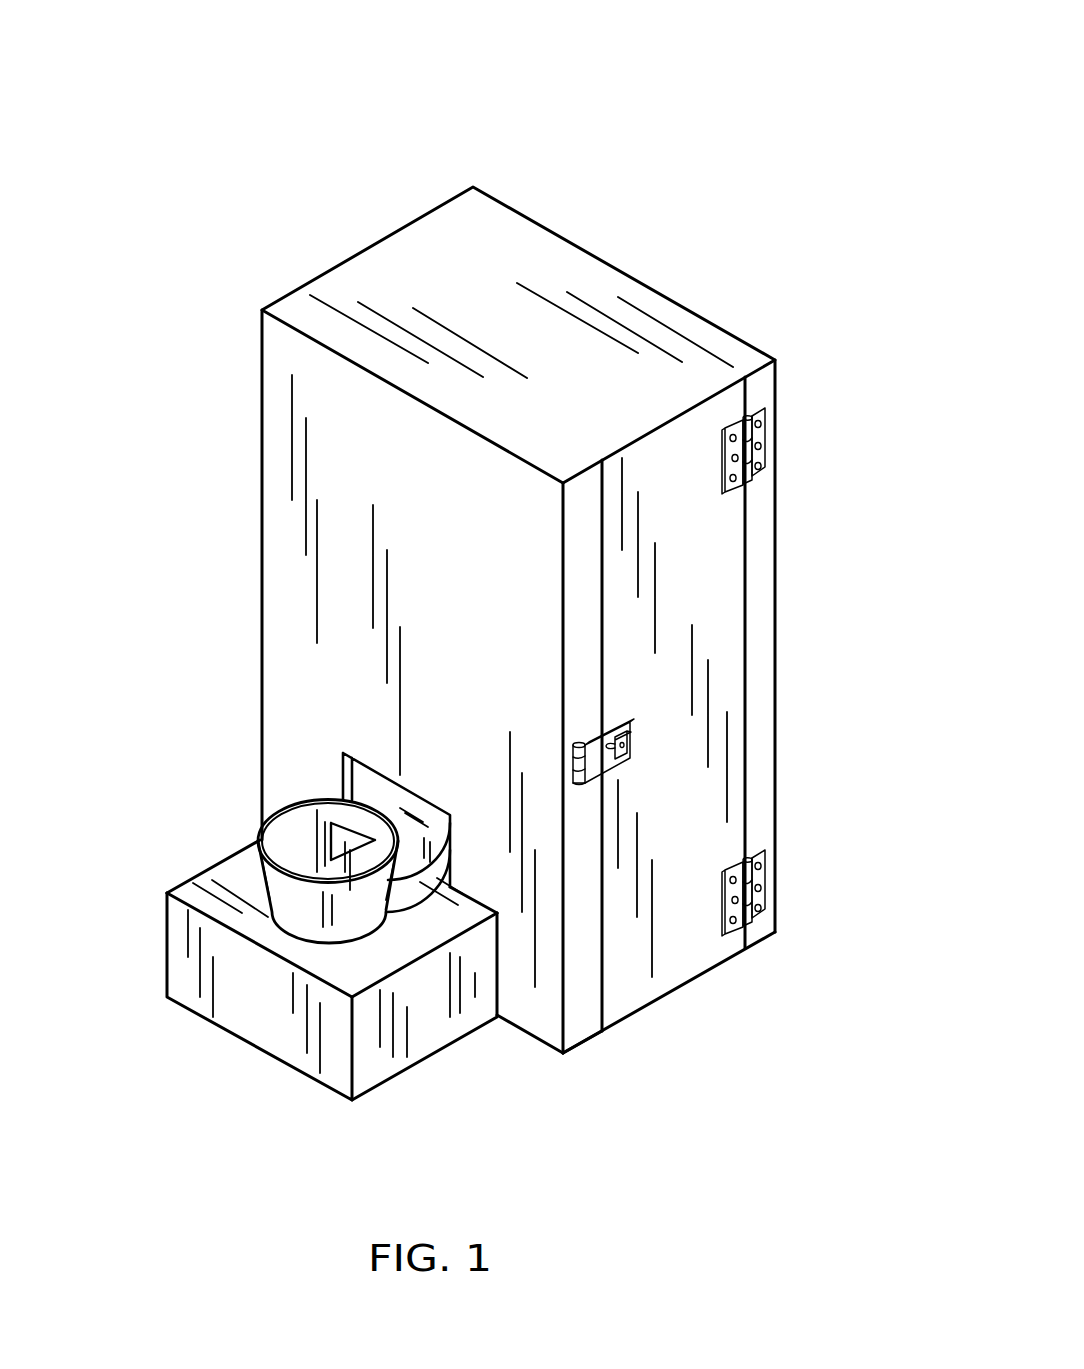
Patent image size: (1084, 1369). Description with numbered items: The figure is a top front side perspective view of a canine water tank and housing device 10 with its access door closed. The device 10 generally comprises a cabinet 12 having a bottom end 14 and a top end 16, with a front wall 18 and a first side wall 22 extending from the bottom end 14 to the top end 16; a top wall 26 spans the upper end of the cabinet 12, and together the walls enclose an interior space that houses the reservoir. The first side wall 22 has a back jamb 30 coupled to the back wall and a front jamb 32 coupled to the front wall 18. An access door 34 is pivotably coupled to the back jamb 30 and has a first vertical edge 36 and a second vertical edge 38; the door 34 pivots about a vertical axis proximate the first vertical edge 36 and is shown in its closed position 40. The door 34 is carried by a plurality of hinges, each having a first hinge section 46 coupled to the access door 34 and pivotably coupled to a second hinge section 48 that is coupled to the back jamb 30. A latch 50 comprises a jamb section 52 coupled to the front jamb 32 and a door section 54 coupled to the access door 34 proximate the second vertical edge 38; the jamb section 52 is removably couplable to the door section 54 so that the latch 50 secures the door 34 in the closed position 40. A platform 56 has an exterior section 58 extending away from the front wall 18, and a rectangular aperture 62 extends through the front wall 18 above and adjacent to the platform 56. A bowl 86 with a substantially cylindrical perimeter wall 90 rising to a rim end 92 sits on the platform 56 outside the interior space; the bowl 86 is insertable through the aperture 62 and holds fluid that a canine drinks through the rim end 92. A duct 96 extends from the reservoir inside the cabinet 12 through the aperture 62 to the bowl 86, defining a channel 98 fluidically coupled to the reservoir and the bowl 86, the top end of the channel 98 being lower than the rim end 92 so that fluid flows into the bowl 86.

The canine water tank and housing device 10 is at (770, 112).
The cabinet 12 is at (604, 238).
The bottom end 14 is at (738, 972).
The top end 16 is at (515, 178).
The front wall 18 is at (297, 400).
The first side wall 22 is at (808, 595).
The top wall 26 is at (412, 255).
The back jamb 30 is at (762, 515).
The front jamb 32 is at (587, 535).
The access door 34 is at (700, 632).
The first vertical edge 36 is at (745, 712).
The second vertical edge 38 is at (600, 895).
The closed position 40 is at (787, 417).
The first hinge section 46 is at (722, 462).
The second hinge section 48 is at (760, 407).
The latch 50 is at (560, 763).
The jamb section 52 is at (580, 727).
The door section 54 is at (632, 752).
The platform 56 is at (232, 982).
The exterior section 58 is at (385, 1050).
The rectangular aperture 62 is at (356, 783).
The bowl 86 is at (285, 837).
The perimeter wall 90 is at (360, 900).
The rim end 92 is at (258, 840).
The duct 96 is at (410, 808).
The channel 98 is at (372, 852).